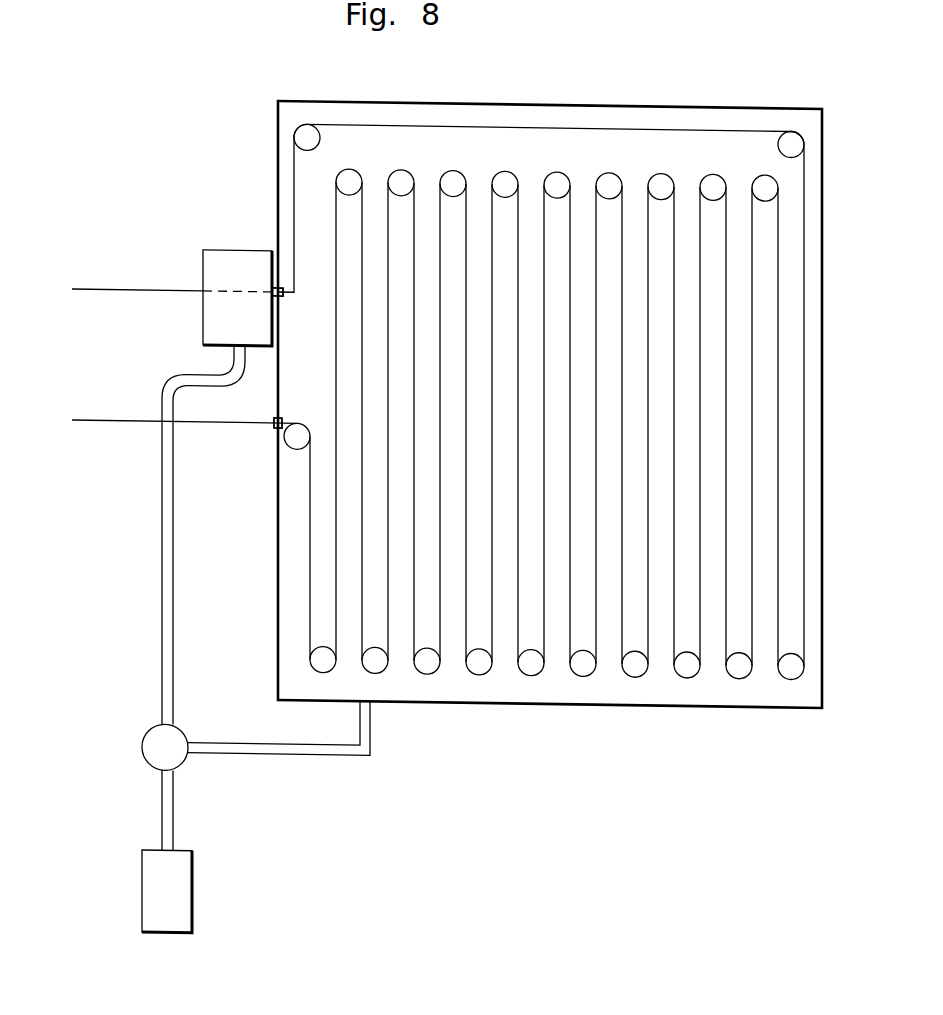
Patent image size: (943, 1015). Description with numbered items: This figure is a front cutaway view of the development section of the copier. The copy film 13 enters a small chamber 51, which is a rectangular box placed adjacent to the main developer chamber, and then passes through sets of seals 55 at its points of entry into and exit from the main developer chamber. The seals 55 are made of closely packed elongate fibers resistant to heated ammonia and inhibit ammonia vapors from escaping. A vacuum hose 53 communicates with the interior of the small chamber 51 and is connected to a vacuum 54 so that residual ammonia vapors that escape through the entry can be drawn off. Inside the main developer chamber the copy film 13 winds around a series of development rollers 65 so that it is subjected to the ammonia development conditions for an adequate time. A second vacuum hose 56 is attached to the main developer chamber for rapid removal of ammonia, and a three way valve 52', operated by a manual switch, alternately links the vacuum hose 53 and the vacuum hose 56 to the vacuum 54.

The copy film 13 is at (143, 292).
The small chamber 51 is at (232, 272).
The seals 55 is at (283, 292).
The vacuum hose 53 is at (162, 531).
The three way valve 52' is at (140, 742).
The vacuum 54 is at (183, 903).
The vacuum hose 56 is at (338, 756).
The development rollers 65 is at (602, 174).